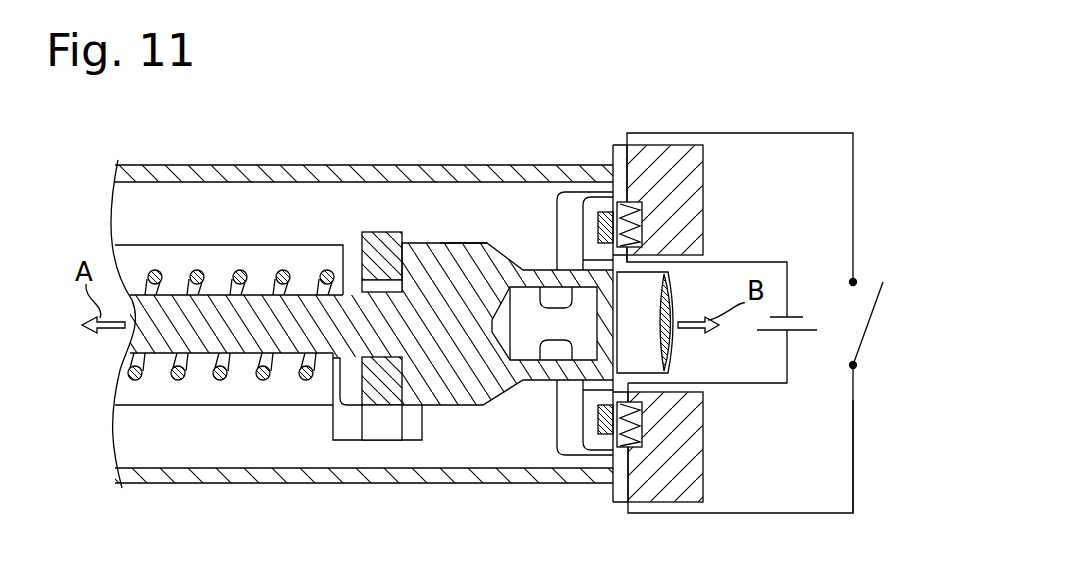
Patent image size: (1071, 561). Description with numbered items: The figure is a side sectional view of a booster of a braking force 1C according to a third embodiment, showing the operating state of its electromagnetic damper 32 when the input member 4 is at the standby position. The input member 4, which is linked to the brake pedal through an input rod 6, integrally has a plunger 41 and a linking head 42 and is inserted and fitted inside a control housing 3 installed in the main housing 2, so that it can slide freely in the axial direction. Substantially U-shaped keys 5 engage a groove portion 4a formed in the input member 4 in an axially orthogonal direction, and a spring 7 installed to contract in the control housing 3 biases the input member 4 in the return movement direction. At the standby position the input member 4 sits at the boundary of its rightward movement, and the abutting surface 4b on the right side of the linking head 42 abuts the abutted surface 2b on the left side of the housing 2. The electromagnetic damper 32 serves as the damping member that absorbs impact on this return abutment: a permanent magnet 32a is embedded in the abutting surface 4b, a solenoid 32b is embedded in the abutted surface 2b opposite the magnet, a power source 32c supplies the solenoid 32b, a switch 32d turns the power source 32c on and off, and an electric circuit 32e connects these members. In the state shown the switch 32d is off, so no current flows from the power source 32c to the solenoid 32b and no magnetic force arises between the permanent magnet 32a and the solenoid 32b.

The valve device 1C is at (452, 100).
The control housing 3 is at (370, 165).
The input member 4 is at (428, 243).
The plunger 41 is at (262, 272).
The linking head 42 is at (462, 243).
The key 5 is at (382, 238).
The spring 7 is at (174, 382).
The groove portion 4a is at (367, 388).
The abutting surface 4b is at (625, 274).
The input rod 6 is at (668, 352).
The main housing 2 is at (655, 150).
The abutted surface 2b is at (615, 145).
The electromagnetic damper 32 is at (788, 130).
The permanent magnet 32a is at (598, 220).
The solenoid 32b is at (642, 215).
The power source 32c is at (790, 335).
The switch 32d is at (870, 330).
The electric circuit 32e is at (853, 472).